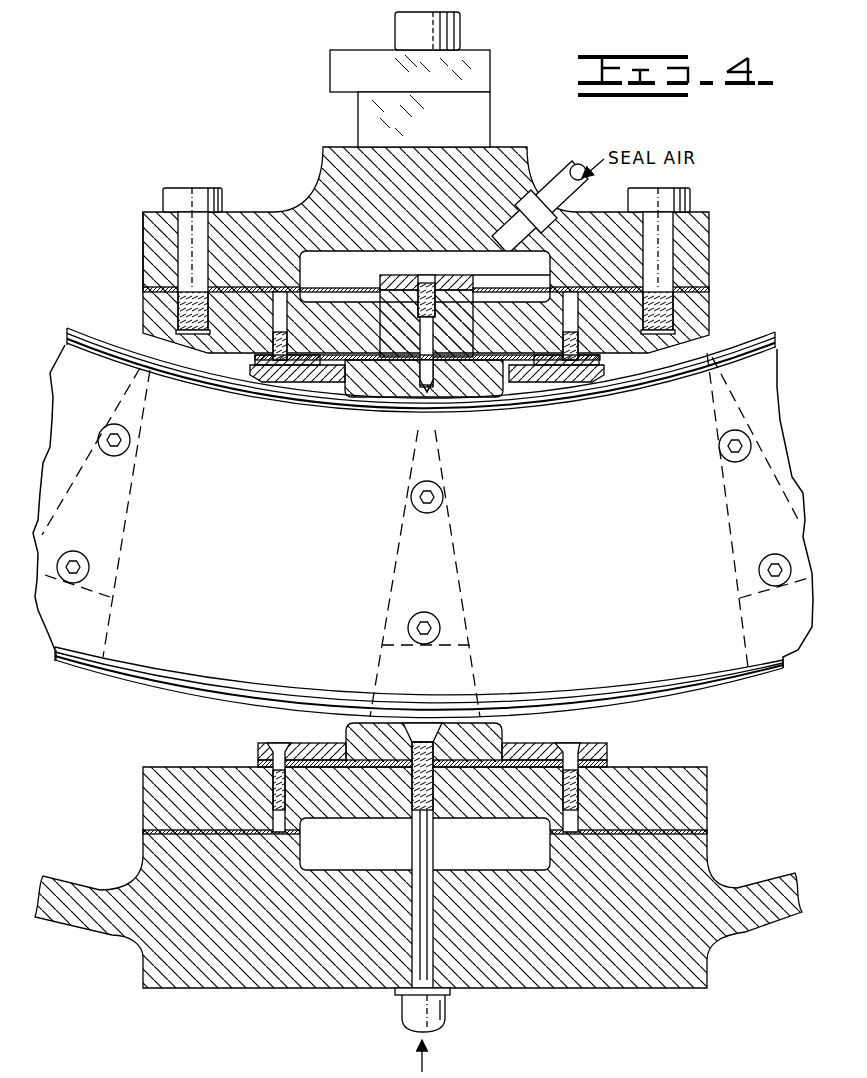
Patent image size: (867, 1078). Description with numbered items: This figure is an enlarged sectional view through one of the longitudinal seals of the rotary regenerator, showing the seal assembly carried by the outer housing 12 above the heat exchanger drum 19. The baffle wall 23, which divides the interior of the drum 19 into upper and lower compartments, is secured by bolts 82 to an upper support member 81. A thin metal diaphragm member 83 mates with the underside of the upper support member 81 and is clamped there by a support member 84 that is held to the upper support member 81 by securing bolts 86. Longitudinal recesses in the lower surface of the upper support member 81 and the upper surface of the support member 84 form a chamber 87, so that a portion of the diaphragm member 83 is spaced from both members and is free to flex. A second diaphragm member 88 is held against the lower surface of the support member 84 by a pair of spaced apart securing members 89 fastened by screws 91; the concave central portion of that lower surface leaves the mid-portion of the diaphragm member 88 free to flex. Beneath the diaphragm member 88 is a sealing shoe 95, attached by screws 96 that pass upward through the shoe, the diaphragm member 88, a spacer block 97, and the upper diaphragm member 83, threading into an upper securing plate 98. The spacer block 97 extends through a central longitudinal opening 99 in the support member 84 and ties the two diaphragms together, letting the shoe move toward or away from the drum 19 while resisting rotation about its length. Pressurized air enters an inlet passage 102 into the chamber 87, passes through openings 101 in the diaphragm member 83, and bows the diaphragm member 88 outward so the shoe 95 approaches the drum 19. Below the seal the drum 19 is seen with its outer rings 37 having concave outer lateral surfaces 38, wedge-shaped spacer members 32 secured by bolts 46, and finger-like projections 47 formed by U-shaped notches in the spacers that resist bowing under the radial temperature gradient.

The main cylindrical outer housing 12 is at (265, 982).
The heat exchanger drum 19 is at (140, 643).
The baffle wall 23 is at (338, 70).
The spacer members 32 is at (458, 690).
The outer rings 37 is at (140, 670).
The concave outer lateral surfaces 38 is at (423, 498).
The bolts 46 is at (425, 612).
The finger-like projections 47 is at (128, 500).
The upper support member 81 is at (290, 215).
The bolts 82 is at (397, 24).
The thin metal diaphragm member 83 is at (145, 271).
The support member 84 is at (145, 299).
The securing bolts 86 is at (173, 210).
The chamber 87 is at (425, 276).
The second diaphragm member 88 is at (412, 418).
The securing members 89 is at (570, 418).
The screws 91 is at (276, 362).
The shoe 95 is at (345, 382).
The screws 96 is at (421, 386).
The spacer block 97 is at (425, 276).
The upper securing plate 98 is at (470, 284).
The central longitudinal opening 99 is at (402, 290).
The openings 101 is at (338, 292).
The inlet passage 102 is at (510, 276).